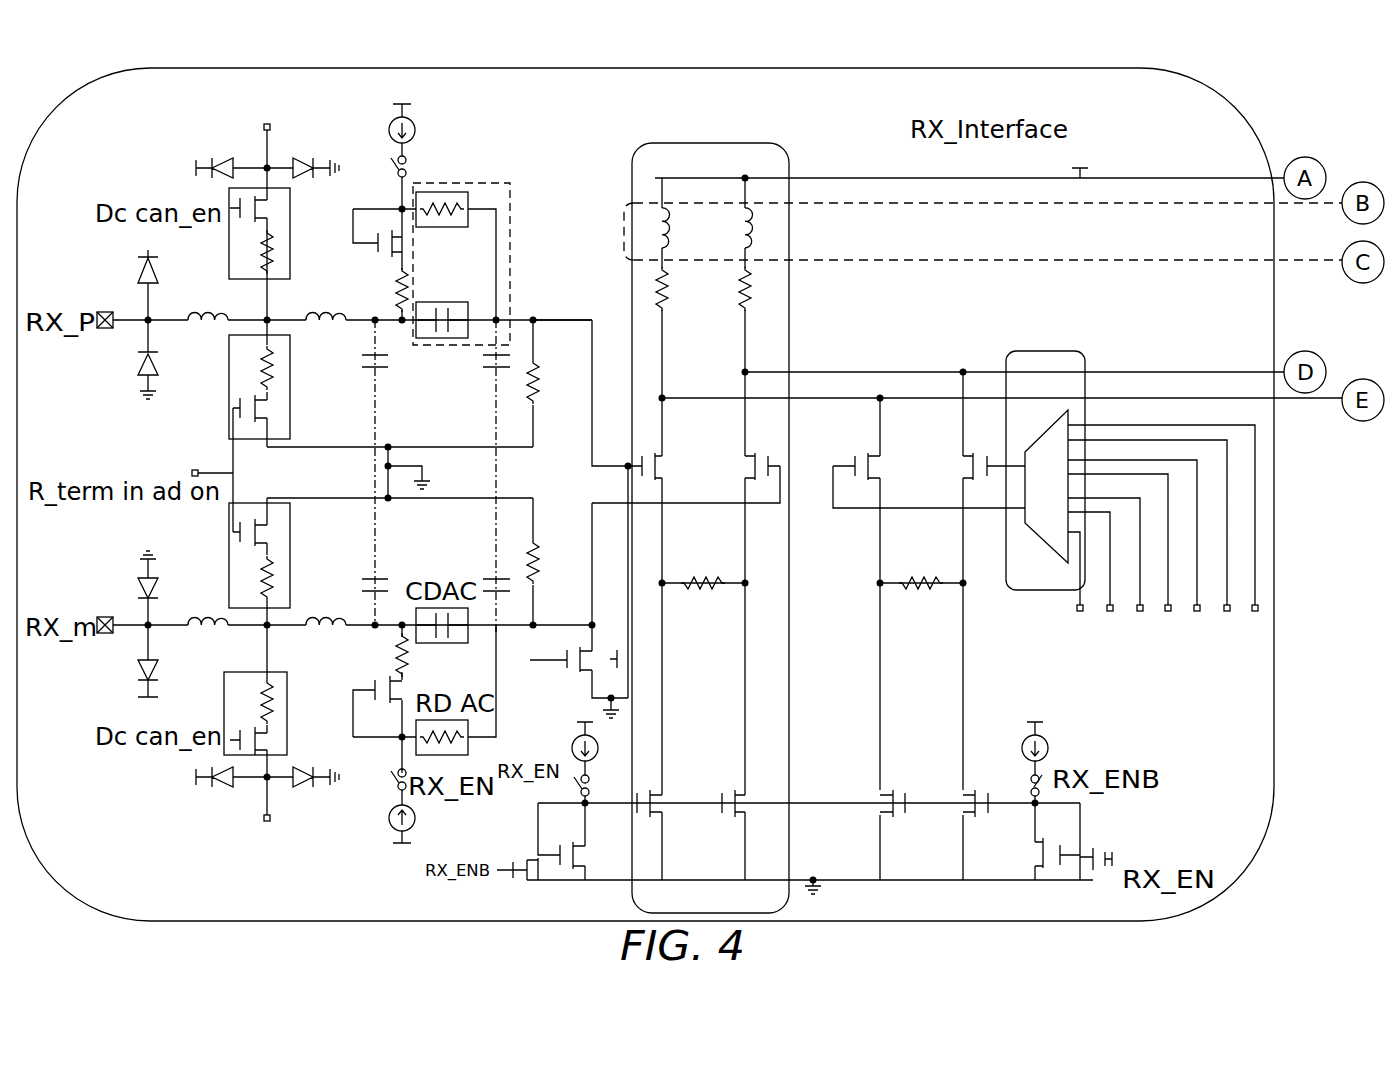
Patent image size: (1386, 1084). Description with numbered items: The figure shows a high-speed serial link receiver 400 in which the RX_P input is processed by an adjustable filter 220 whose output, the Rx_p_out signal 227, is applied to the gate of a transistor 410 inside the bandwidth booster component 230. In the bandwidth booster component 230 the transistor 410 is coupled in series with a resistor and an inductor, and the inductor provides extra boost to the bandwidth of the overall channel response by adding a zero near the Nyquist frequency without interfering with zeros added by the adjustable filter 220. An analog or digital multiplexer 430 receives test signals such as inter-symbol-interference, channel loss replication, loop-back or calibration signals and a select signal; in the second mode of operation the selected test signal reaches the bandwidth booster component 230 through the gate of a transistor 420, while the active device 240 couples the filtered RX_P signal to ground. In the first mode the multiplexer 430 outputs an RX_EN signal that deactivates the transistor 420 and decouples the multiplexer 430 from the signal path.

The high-speed serial link receiver 400 is at (94, 74).
The adjustable filter 220 is at (495, 182).
The Rx_p_out signal 227 is at (557, 320).
The bandwidth booster component 230 is at (939, 494).
The active device 240 is at (590, 652).
The transistor 410 is at (661, 458).
The transistor 420 is at (967, 460).
The analog or digital multiplexer 430 is at (1062, 420).